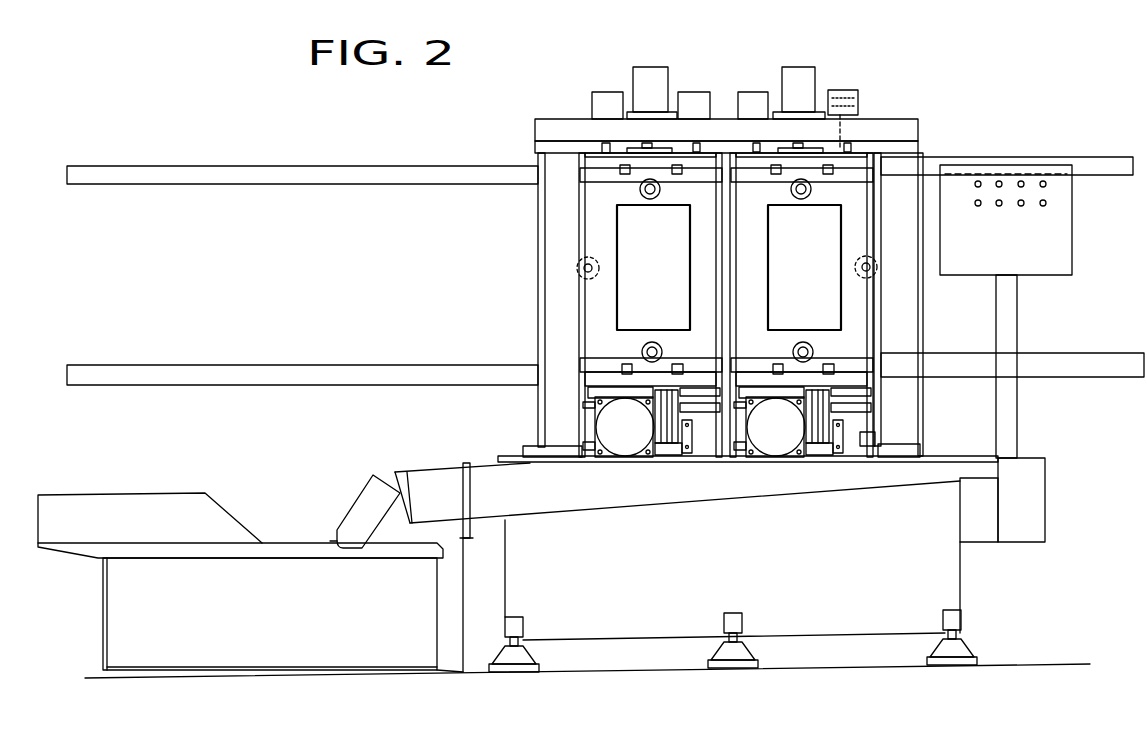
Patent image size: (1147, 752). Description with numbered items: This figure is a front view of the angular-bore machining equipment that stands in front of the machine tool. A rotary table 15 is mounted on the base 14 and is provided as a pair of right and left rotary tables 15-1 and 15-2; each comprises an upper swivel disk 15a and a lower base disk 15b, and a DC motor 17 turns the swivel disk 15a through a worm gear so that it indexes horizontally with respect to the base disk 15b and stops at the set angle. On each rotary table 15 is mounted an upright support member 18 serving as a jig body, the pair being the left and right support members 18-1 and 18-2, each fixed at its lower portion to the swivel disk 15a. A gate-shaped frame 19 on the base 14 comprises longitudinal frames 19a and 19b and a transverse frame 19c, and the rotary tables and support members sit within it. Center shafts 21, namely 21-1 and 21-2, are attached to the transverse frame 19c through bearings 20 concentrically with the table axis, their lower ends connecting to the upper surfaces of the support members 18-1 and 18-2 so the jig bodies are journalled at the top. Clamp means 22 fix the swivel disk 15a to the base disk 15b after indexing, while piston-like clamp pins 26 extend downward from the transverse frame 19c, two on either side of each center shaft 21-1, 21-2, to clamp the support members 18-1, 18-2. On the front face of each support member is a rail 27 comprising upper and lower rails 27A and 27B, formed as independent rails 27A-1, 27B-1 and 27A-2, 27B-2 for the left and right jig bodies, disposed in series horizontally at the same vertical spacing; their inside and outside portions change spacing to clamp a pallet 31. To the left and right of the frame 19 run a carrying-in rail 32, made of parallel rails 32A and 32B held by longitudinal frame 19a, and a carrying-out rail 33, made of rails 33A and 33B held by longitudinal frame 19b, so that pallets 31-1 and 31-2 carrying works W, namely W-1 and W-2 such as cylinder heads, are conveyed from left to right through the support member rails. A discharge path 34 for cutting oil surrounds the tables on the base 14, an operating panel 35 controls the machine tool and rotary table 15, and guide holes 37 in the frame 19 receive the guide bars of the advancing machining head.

The base 14 is at (805, 623).
The rotary table 15 is at (740, 470).
The left rotary table 15-1 is at (713, 442).
The right rotary table 15-2 is at (853, 433).
The swivel disk 15a is at (585, 392).
The base disk 15b is at (580, 449).
The DC motor 17 is at (625, 447).
The support member 18 is at (751, 305).
The left support member 18-1 is at (590, 205).
The right support member 18-2 is at (832, 318).
The gate-shaped frame 19 is at (537, 131).
The longitudinal frame 19a is at (545, 343).
The longitudinal frame 19b is at (914, 340).
The transverse frame 19c is at (727, 126).
The bearings 20 is at (655, 70).
The center shaft 21 is at (730, 96).
The center shaft 21-1 is at (652, 143).
The center shaft 21-2 is at (803, 143).
The clamp means 22 is at (673, 440).
The clamp pin 26 is at (608, 142).
The rail 27 is at (672, 274).
The upper rail 27A is at (677, 145).
The upper rail 27A-1 is at (588, 183).
The upper rail 27A-2 is at (878, 172).
The lower rail 27B is at (653, 399).
The lower rail 27B-1 is at (585, 368).
The lower rail 27B-2 is at (887, 365).
The pallet 31 is at (740, 260).
The pallet 31-1 is at (592, 237).
The pallet 31-2 is at (860, 207).
The carrying-in rail 32 is at (302, 277).
The upper carrying-in rail 32A is at (175, 177).
The lower carrying-in rail 32B is at (182, 377).
The carrying-out rail 33 is at (1012, 270).
The upper carrying-out rail 33A is at (1093, 165).
The lower carrying-out rail 33B is at (1093, 370).
The discharge path 34 is at (520, 497).
The operating panel 35 is at (1060, 247).
The guide holes 37 is at (590, 273).
The work W is at (711, 268).
The work W-1 is at (628, 305).
The work W-2 is at (830, 290).